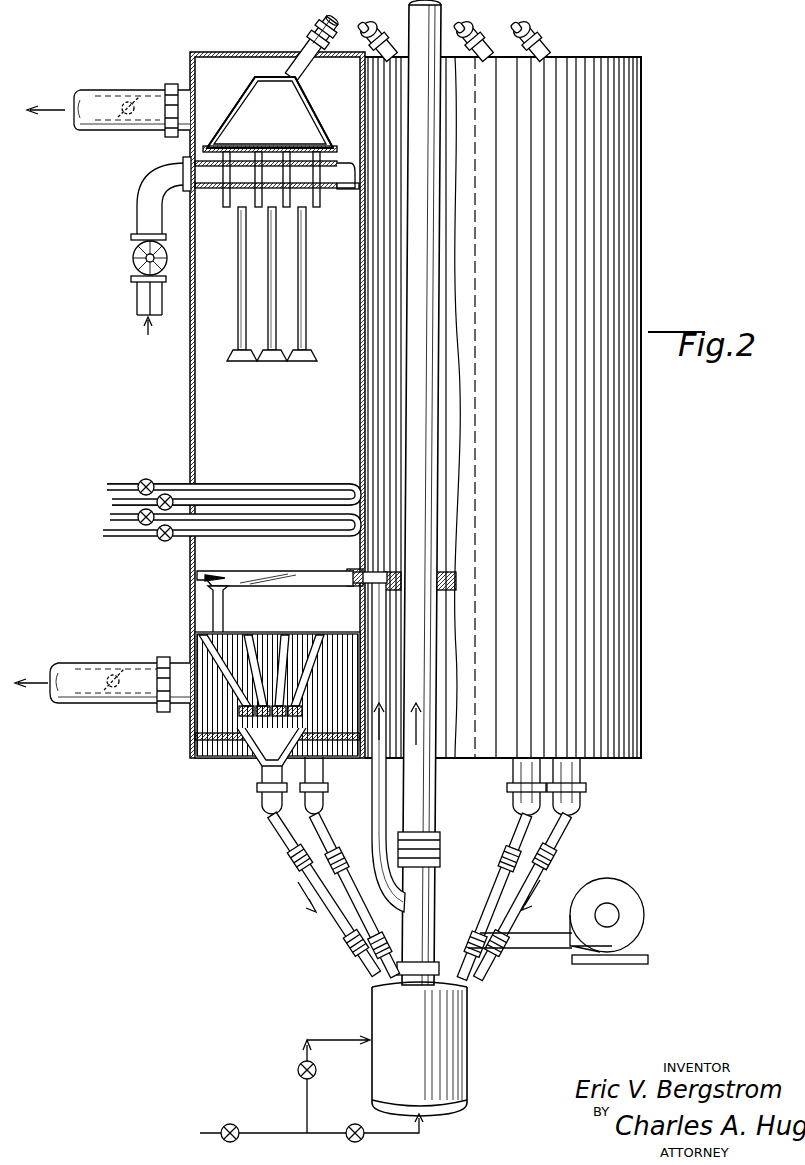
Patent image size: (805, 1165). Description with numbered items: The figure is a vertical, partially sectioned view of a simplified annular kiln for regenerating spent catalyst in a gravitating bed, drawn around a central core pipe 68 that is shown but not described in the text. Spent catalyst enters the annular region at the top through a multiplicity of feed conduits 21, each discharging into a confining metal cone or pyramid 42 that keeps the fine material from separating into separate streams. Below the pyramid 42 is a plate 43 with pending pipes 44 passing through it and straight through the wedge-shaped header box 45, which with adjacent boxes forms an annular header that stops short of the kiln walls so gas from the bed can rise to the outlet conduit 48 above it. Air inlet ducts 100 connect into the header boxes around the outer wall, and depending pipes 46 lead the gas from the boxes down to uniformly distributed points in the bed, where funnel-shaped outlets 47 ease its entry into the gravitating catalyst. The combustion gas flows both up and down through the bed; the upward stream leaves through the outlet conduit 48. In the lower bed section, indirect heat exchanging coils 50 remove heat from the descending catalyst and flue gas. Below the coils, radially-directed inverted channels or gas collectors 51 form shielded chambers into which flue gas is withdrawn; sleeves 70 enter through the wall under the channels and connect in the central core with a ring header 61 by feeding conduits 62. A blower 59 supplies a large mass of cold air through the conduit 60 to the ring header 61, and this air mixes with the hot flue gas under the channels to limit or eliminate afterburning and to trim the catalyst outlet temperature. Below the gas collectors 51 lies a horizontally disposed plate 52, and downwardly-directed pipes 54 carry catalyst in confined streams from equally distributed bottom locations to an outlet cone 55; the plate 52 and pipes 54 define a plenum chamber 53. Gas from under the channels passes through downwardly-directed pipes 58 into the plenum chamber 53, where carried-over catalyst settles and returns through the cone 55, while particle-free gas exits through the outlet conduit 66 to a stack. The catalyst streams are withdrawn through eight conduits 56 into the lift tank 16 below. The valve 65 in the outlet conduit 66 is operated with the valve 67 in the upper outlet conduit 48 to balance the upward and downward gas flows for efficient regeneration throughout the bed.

The lift tank 16 is at (452, 1045).
The feed conduits 21 is at (378, 33).
The confining metal cone or pyramid 42 is at (302, 95).
The plate 43 is at (292, 115).
The pending pipes 44 is at (222, 196).
The wedge-shaped header box 45 is at (340, 168).
The depending pipes 46 is at (303, 254).
The funnel-shaped outlets 47 is at (300, 358).
The outlet conduit 48 is at (148, 88).
The indirect heat exchanging coils 50 is at (182, 484).
The gas collectors 51 is at (286, 586).
The horizontally disposed plate 52 is at (195, 628).
The plenum chamber 53 is at (197, 724).
The downwardly-directed pipes 54 is at (250, 672).
The outlet cone 55 is at (253, 757).
The conduits 56 is at (330, 918).
The downwardly-directed pipes 58 is at (213, 604).
The blower 59 is at (632, 898).
The conduit 60 is at (372, 802).
The ring header 61 is at (380, 572).
The feeding conduits 62 is at (340, 573).
The valve 65 is at (114, 668).
The outlet conduit 66 is at (86, 706).
The valve 67 is at (120, 90).
The riser pipe 68 is at (430, 812).
The sleeves 70 is at (353, 586).
The air inlet ducts 100 is at (137, 211).